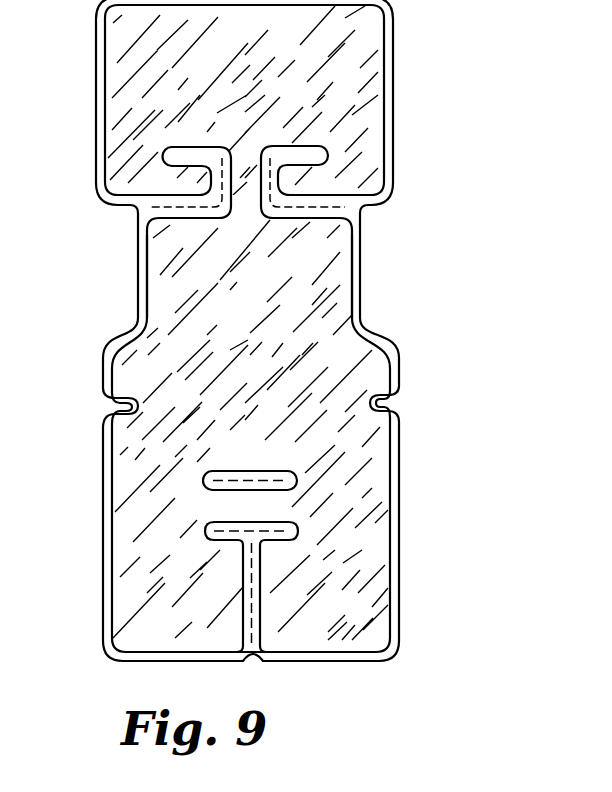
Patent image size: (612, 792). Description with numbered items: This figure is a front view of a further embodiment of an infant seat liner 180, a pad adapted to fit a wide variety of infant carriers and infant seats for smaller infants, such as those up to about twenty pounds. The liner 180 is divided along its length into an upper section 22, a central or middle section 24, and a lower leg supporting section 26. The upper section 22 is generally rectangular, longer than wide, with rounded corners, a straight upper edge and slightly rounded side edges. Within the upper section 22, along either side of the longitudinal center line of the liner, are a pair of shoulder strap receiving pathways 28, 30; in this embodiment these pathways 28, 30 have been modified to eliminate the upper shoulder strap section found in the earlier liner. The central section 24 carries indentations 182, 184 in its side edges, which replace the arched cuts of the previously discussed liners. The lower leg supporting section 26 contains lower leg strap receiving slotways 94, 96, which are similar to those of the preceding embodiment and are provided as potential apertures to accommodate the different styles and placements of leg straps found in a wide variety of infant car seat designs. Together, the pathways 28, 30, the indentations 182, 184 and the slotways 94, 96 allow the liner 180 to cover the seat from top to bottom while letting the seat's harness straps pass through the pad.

The infant seat liner 180 is at (412, 62).
The upper section 22 is at (376, 127).
The middle section 24 is at (331, 283).
The lower leg supporting section 26 is at (377, 548).
The shoulder strap receiving pathway 28 is at (176, 186).
The shoulder strap receiving pathway 30 is at (322, 178).
The indentation 182 is at (120, 407).
The indentation 184 is at (386, 405).
The lower slotway 94 is at (185, 495).
The lower leg strap receiving slotway 96 is at (205, 599).